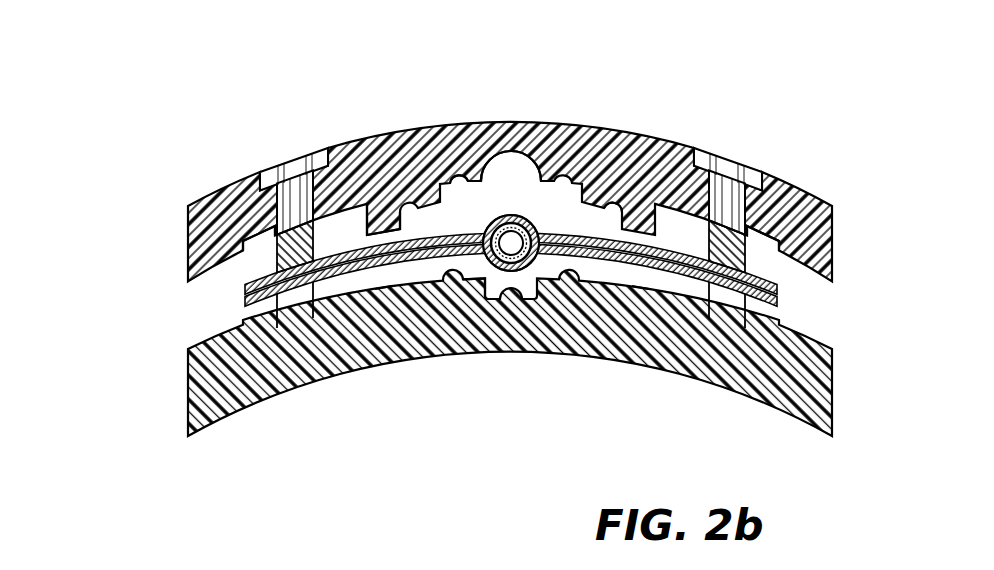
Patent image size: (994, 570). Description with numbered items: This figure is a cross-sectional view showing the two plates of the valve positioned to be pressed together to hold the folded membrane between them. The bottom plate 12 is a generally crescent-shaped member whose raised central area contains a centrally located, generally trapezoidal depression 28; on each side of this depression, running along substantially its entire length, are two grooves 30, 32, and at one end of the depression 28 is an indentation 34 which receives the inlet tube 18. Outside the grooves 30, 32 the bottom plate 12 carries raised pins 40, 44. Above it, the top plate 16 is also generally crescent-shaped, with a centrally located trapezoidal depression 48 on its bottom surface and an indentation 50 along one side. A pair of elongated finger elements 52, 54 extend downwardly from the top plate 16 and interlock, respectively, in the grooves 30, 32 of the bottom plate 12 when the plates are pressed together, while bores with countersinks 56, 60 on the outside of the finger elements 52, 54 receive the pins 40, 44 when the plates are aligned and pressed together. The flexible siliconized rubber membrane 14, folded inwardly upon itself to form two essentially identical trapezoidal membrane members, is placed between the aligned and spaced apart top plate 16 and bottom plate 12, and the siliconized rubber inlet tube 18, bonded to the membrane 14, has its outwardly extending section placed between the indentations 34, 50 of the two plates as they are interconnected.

The bottom plate 12 is at (165, 397).
The membrane 14 is at (806, 321).
The top plate 16 is at (165, 246).
The inlet tube 18 is at (555, 246).
The depression 28 is at (463, 278).
The groove 30 is at (382, 303).
The groove 32 is at (645, 303).
The indentation 34 is at (485, 301).
The raised pin 40 is at (265, 242).
The raised pin 44 is at (757, 244).
The depression 48 is at (463, 190).
The indentation 50 is at (514, 165).
The finger element 52 is at (410, 208).
The finger element 54 is at (607, 212).
The bore with countersink 56 is at (280, 175).
The bore with countersink 60 is at (712, 162).